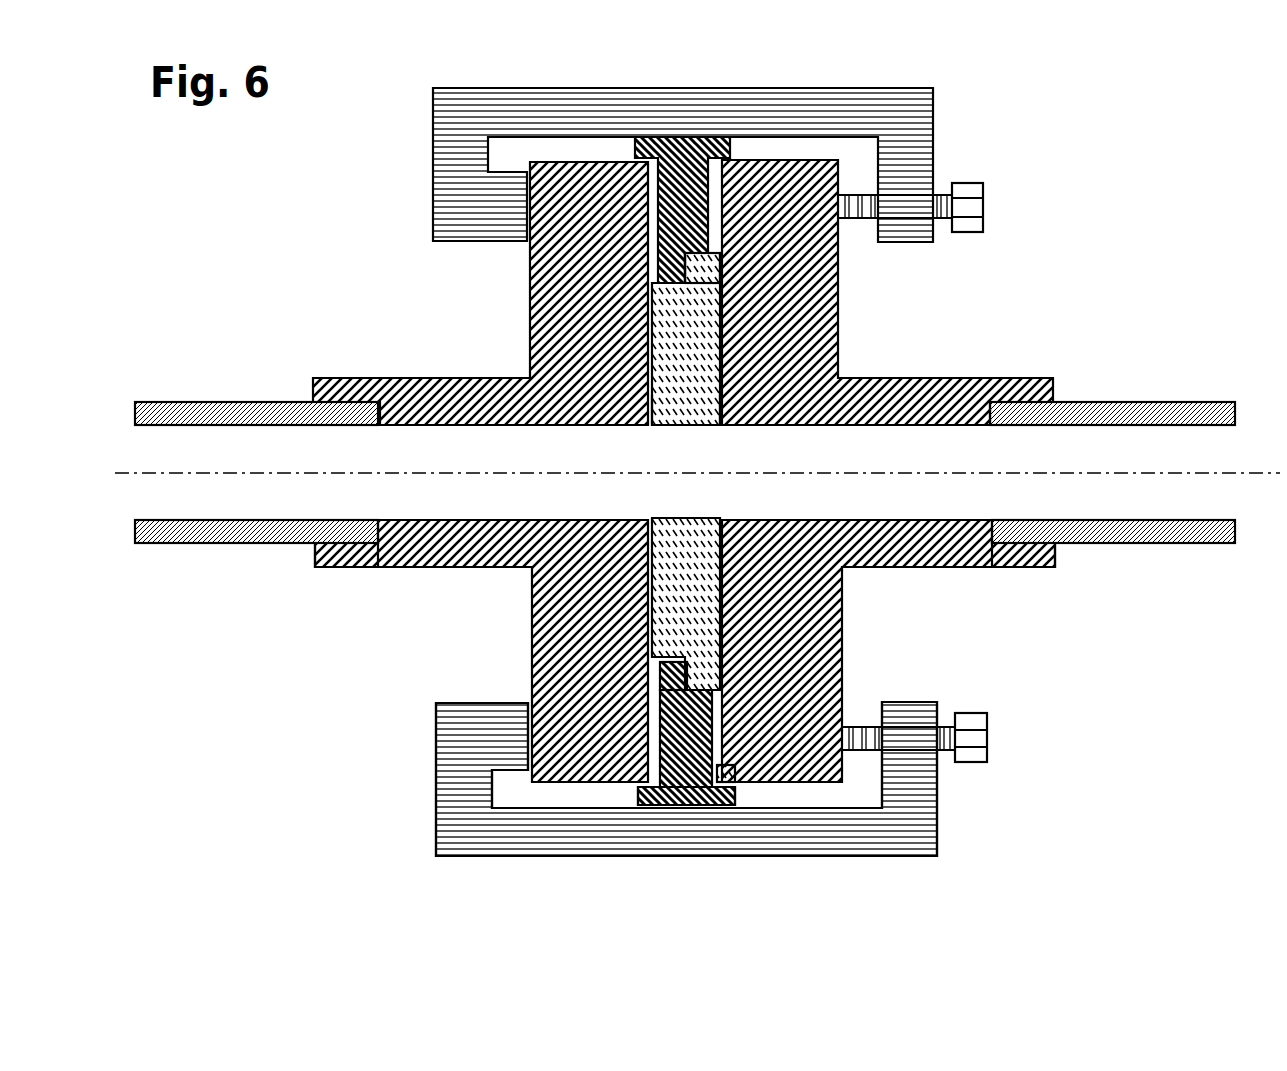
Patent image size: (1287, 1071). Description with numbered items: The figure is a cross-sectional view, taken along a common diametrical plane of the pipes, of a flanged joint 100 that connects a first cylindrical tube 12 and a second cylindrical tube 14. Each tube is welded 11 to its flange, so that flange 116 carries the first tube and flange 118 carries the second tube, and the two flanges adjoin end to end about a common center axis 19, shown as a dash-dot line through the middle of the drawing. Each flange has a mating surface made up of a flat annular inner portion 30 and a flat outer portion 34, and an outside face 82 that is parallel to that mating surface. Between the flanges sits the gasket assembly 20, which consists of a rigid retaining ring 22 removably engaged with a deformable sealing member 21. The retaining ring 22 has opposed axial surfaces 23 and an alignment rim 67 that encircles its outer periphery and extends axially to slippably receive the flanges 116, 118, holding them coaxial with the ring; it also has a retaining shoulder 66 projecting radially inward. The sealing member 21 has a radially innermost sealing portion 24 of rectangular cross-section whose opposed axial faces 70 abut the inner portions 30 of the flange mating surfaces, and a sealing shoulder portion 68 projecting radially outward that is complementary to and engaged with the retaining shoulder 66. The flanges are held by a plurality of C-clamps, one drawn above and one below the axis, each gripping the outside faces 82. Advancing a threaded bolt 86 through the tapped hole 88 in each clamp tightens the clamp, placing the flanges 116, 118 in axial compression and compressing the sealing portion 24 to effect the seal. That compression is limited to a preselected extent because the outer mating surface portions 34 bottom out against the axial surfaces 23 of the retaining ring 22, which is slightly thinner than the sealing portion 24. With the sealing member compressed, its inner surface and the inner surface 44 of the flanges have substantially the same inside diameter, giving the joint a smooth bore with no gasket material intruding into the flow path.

The joint 100 is at (1052, 219).
The weld 11 is at (309, 392).
The first cylindrical tube 12 is at (225, 400).
The second cylindrical tube 14 is at (1143, 400).
The common center axis 19 is at (1245, 482).
The gasket assembly 20 is at (698, 629).
The sealing member 21 is at (668, 427).
The retaining ring 22 is at (730, 748).
The axial surfaces 23 is at (660, 238).
The sealing portion 24 is at (700, 317).
The inner portion of mating surface 30 is at (645, 556).
The outer portion of mating surface 34 is at (721, 770).
The inner surface of flanges 44 is at (533, 518).
The retaining shoulder 66 is at (662, 674).
The alignment rim 67 is at (652, 808).
The sealing shoulder portion 68 is at (700, 270).
The axial faces 70 is at (648, 343).
The outside faces 82 is at (842, 636).
The threaded bolt 86 is at (983, 190).
The tapped hole 88 is at (917, 220).
The flange 116 is at (383, 574).
The flange 118 is at (940, 569).